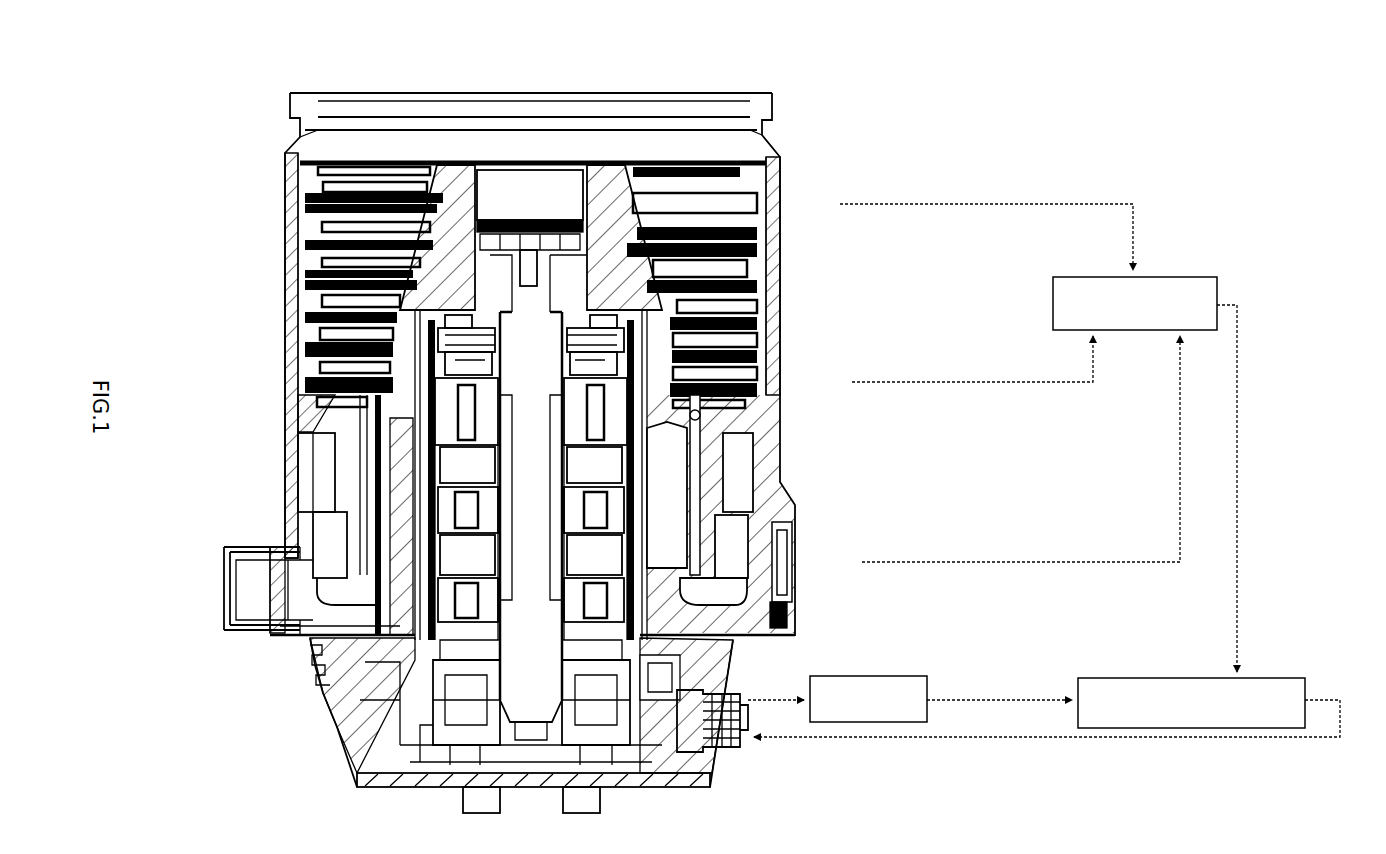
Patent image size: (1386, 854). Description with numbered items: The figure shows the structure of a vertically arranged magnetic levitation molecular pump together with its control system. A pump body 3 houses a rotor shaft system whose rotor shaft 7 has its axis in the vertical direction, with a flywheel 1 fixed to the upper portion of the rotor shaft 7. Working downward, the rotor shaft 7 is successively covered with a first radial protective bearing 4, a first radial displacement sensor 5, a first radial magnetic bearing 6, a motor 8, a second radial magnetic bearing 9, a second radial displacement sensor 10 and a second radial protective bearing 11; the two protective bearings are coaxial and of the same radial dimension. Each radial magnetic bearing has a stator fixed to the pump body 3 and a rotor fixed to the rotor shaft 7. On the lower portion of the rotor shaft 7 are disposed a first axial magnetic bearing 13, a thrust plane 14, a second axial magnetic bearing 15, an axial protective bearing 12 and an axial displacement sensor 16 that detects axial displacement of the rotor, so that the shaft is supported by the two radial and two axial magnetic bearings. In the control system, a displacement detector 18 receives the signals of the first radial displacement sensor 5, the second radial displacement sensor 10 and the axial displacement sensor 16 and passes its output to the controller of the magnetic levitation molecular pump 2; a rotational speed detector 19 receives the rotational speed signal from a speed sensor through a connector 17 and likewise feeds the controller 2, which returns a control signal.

The flywheel 1 is at (607, 183).
The controller of a magnetic levitation molecular pump 2 is at (1047, 707).
The pump body 3 is at (768, 166).
The first radial protective bearing 4 is at (700, 268).
The first radial displacement sensor 5 is at (692, 330).
The first radial magnetic bearing 6 is at (742, 335).
The rotor shaft 7 is at (730, 372).
The motor 8 is at (766, 376).
The second radial magnetic bearing 9 is at (700, 470).
The second radial displacement sensor 10 is at (745, 460).
The second radial protective bearing 11 is at (660, 520).
The axial protective bearing 12 is at (630, 560).
The first axial magnetic bearing 13 is at (585, 612).
The thrust plane 14 is at (700, 612).
The second axial magnetic bearing 15 is at (660, 685).
The axial displacement sensor 16 is at (790, 612).
The connector 17 is at (735, 695).
The displacement detector 18 is at (1038, 438).
The rotational speed detector 19 is at (910, 695).